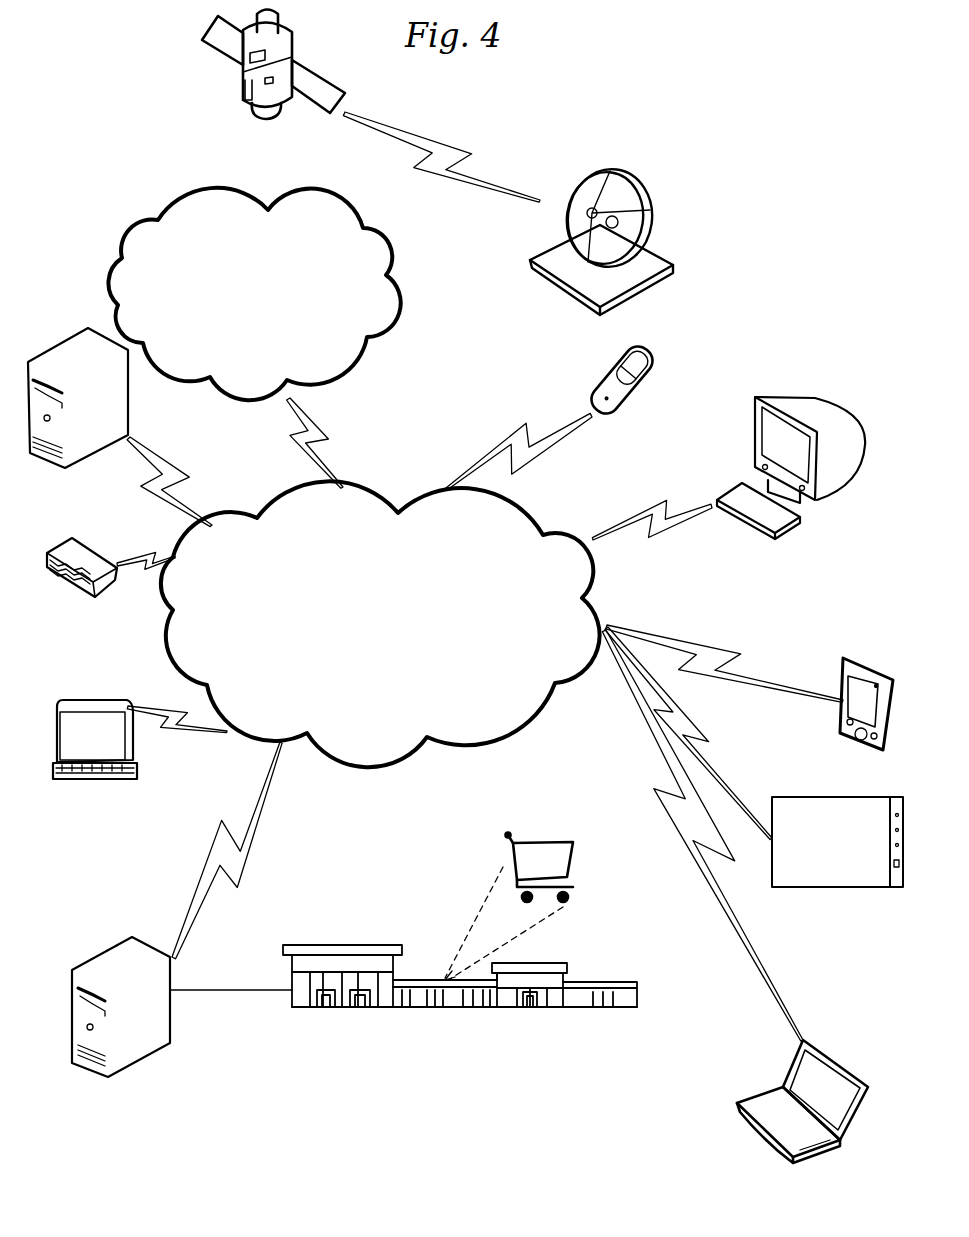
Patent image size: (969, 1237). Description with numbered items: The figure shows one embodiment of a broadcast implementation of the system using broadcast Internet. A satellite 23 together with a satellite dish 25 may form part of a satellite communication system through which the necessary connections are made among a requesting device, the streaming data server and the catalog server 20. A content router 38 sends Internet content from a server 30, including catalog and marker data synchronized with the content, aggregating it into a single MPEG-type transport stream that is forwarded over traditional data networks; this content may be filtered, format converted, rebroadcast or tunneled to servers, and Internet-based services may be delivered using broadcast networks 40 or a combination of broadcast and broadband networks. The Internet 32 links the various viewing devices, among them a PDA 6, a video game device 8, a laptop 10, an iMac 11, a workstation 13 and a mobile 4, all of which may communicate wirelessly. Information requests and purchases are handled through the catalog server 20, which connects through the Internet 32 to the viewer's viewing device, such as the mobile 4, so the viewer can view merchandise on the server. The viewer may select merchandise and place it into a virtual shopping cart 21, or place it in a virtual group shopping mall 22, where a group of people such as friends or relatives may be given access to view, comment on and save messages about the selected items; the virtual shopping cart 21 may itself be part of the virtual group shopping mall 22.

The satellite 23 is at (243, 72).
The satellite dish 25 is at (647, 240).
The broadcast network 40 is at (254, 294).
The server 30 is at (28, 362).
The content router 38 is at (113, 585).
The mobile 4 is at (585, 398).
The iMac 11 is at (757, 395).
The Internet 32 is at (380, 624).
The PDA 6 is at (845, 657).
The video game device 8 is at (790, 888).
The laptop 10 is at (737, 1103).
The workstation 13 is at (135, 775).
The catalog server 20 is at (170, 1045).
The virtual shopping cart 21 is at (510, 852).
The virtual group shopping mall 22 is at (318, 946).